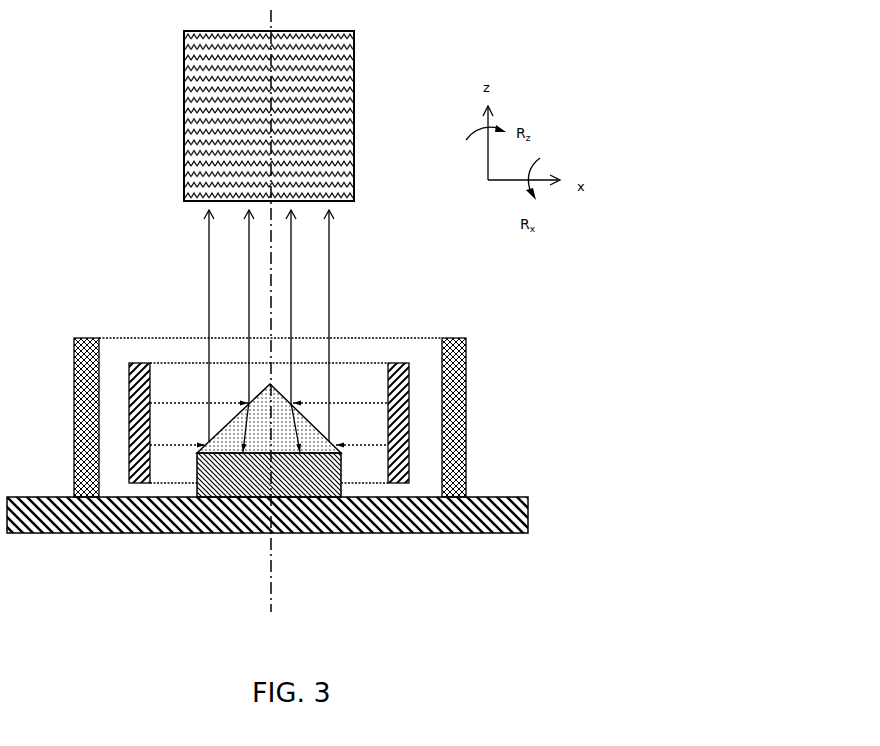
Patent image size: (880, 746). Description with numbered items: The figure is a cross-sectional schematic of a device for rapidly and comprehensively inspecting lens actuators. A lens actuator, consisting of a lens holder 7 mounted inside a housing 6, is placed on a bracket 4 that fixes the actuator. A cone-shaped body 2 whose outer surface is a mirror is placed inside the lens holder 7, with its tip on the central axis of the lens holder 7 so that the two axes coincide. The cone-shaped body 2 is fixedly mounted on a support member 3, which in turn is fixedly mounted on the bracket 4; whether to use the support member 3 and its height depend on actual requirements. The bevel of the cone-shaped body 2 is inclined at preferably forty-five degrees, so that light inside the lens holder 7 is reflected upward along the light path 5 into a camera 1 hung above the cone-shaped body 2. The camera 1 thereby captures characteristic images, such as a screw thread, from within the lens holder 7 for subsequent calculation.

The camera 1 is at (343, 136).
The cone-shaped body 2 is at (286, 400).
The support member 3 is at (343, 466).
The bracket 4 is at (412, 501).
The light path 5 is at (208, 290).
The housing 6 is at (88, 383).
The lens holder 7 is at (134, 450).